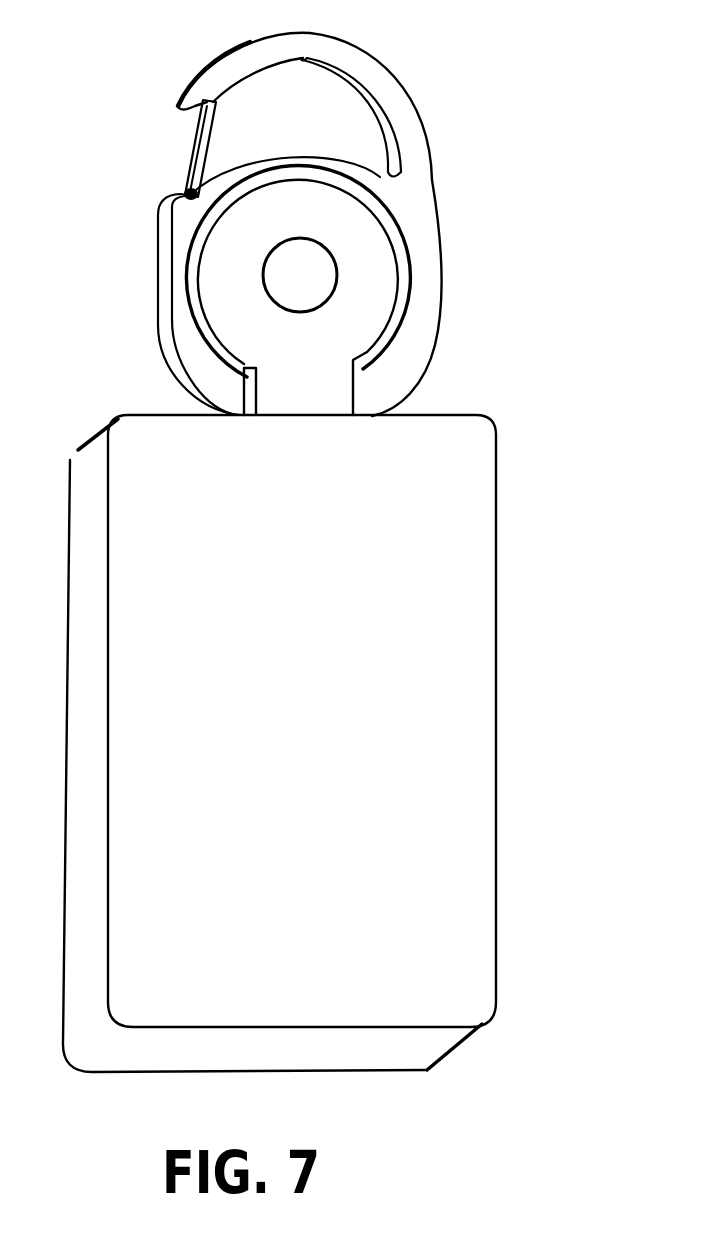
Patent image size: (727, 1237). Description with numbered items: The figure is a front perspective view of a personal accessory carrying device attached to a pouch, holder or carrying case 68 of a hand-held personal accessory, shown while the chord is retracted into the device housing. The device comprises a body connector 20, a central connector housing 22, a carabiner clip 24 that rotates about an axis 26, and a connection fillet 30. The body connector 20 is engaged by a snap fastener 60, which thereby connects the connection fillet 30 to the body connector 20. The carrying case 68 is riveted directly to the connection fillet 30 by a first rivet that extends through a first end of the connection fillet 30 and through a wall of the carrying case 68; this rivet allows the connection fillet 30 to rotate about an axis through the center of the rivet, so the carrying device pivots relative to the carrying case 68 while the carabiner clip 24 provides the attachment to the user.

The body connector 20 is at (392, 84).
The carabiner clip 24 is at (195, 142).
The axis 26 is at (188, 191).
The central connector housing 22 is at (392, 330).
The snap fastener 60 is at (310, 275).
The connection fillet 30 is at (327, 390).
The carrying case 68 is at (467, 505).